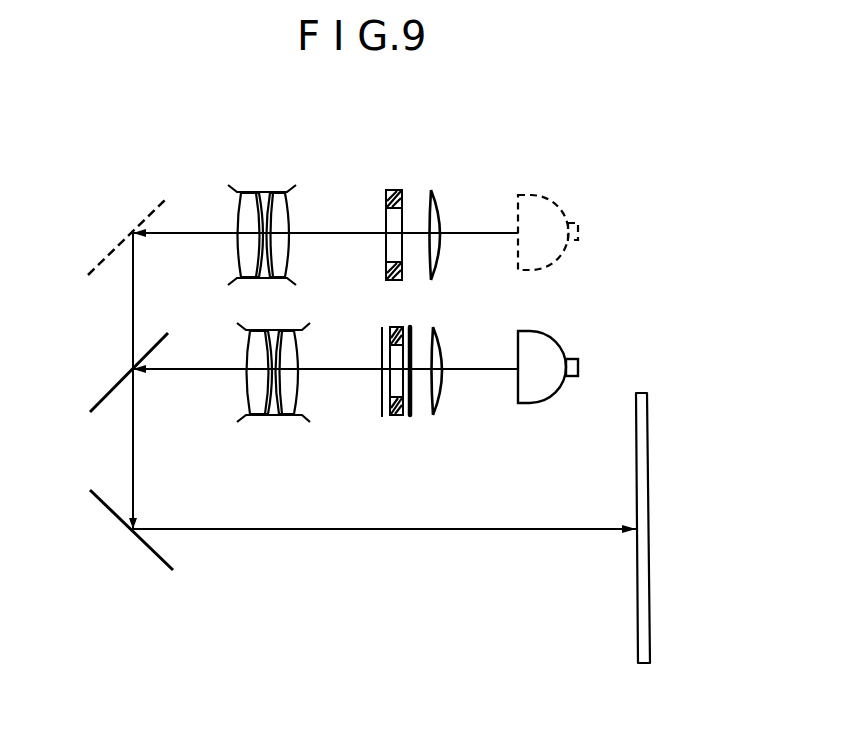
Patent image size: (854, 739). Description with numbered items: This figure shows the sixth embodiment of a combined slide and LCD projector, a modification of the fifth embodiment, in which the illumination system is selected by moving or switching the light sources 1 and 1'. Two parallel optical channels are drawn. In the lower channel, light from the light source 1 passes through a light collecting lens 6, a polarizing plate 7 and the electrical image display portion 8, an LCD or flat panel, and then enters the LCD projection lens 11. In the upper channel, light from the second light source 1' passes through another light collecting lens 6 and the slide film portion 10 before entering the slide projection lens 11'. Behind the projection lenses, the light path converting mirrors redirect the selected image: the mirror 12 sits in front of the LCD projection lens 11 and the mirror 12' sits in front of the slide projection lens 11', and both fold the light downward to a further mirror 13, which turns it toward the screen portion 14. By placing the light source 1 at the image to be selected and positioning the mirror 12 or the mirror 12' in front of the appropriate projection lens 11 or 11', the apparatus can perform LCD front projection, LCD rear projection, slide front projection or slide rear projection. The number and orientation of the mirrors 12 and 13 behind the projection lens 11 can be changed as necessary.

The light source 1 is at (550, 355).
The light source 1' is at (552, 227).
The light collecting lens 6 is at (431, 190).
The polarizing plate 7 is at (415, 415).
The electrical image display portion 8 is at (383, 404).
The slide film portion 10 is at (392, 188).
The projection lens 11 is at (273, 397).
The slide projection lens 11' is at (262, 214).
The mirror 12 is at (129, 371).
The mirror 12' is at (127, 233).
The light path converting portion 13 is at (117, 518).
The screen portion 14 is at (643, 507).